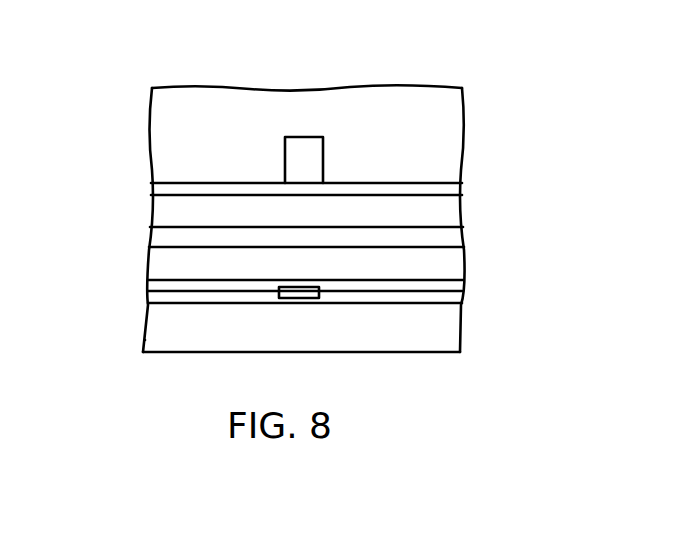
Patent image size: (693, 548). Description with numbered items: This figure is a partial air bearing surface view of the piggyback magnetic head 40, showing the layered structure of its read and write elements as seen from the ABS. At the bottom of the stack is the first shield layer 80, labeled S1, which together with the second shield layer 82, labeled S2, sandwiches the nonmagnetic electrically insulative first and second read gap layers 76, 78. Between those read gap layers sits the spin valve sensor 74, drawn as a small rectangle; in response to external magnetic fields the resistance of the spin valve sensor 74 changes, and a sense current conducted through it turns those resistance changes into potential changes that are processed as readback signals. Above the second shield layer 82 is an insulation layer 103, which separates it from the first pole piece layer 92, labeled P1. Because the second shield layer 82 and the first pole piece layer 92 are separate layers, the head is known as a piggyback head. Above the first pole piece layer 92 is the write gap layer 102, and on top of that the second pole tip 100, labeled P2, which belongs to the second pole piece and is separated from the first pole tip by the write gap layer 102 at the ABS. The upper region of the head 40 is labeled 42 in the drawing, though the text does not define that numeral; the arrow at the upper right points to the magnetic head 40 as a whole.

The piggyback magnetic head 40 is at (522, 90).
The top shield / gap layer 42 is at (158, 114).
The second pole tip 100 is at (308, 147).
The write gap layer 102 is at (231, 190).
The first pole piece layer 92 is at (157, 212).
The insulation layer 103 is at (435, 238).
The second shield layer 82 is at (157, 266).
The second read gap layer 78 is at (423, 287).
The first read gap layer 76 is at (178, 307).
The spin valve sensor 74 is at (302, 298).
The first shield layer 80 is at (442, 330).
The first pole piece P1 is at (382, 213).
The second pole piece P2 is at (311, 165).
The first shield S1 is at (376, 325).
The second shield S2 is at (376, 263).